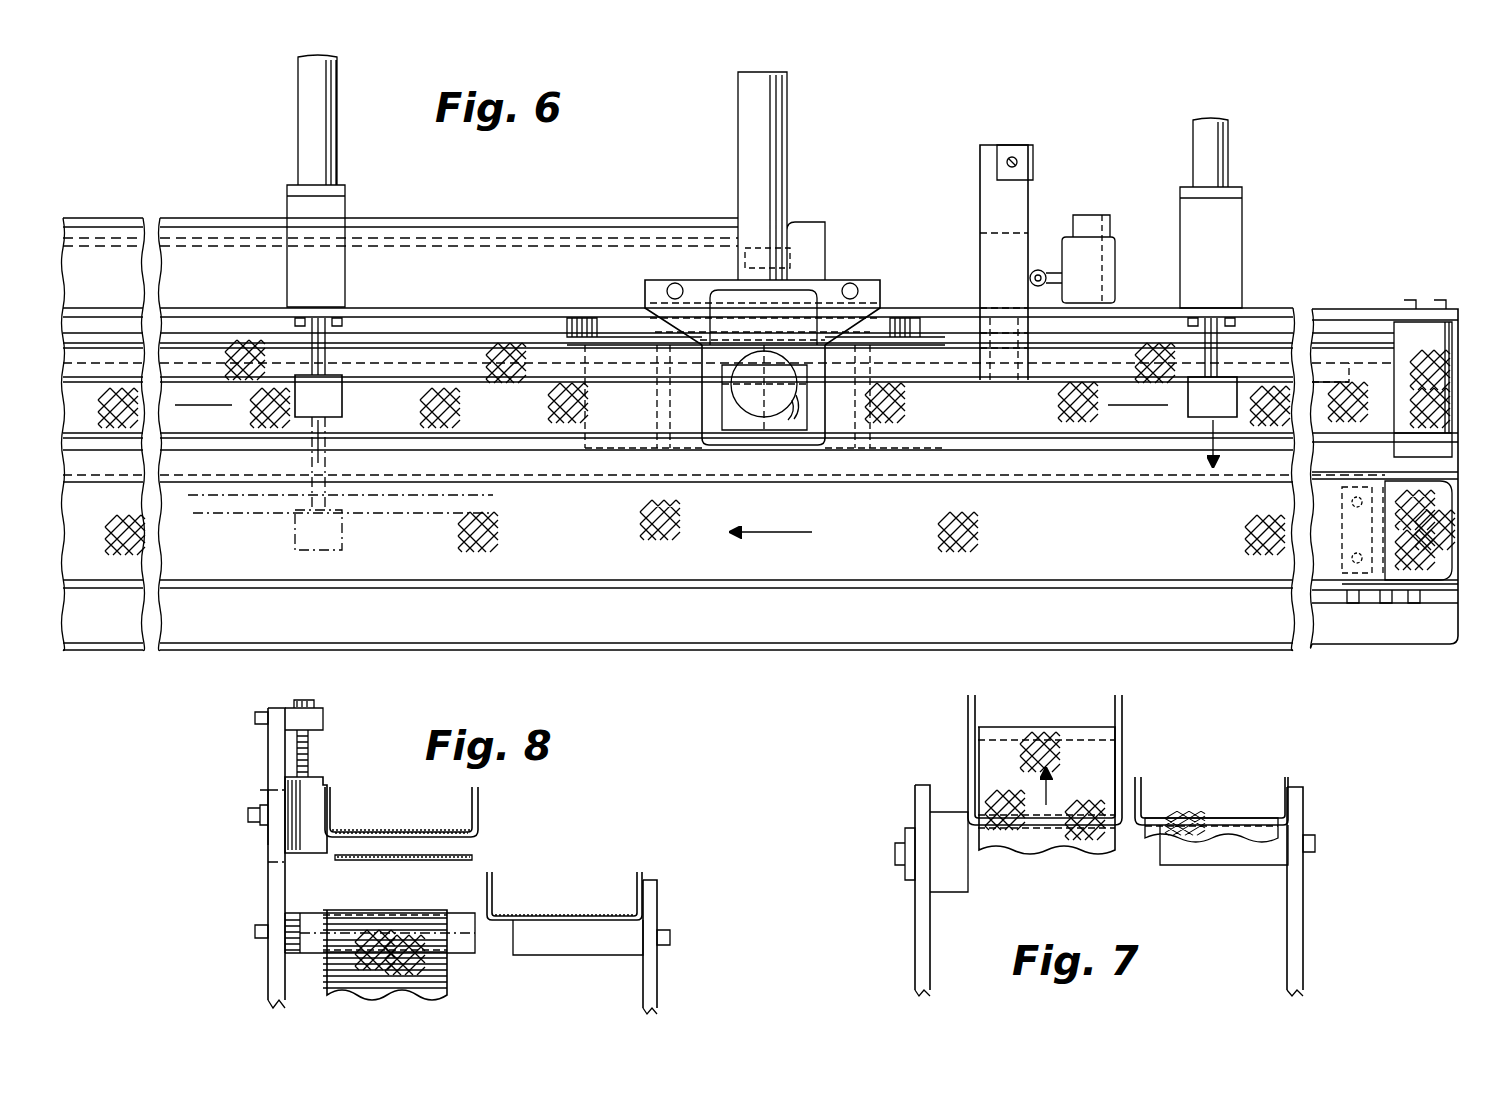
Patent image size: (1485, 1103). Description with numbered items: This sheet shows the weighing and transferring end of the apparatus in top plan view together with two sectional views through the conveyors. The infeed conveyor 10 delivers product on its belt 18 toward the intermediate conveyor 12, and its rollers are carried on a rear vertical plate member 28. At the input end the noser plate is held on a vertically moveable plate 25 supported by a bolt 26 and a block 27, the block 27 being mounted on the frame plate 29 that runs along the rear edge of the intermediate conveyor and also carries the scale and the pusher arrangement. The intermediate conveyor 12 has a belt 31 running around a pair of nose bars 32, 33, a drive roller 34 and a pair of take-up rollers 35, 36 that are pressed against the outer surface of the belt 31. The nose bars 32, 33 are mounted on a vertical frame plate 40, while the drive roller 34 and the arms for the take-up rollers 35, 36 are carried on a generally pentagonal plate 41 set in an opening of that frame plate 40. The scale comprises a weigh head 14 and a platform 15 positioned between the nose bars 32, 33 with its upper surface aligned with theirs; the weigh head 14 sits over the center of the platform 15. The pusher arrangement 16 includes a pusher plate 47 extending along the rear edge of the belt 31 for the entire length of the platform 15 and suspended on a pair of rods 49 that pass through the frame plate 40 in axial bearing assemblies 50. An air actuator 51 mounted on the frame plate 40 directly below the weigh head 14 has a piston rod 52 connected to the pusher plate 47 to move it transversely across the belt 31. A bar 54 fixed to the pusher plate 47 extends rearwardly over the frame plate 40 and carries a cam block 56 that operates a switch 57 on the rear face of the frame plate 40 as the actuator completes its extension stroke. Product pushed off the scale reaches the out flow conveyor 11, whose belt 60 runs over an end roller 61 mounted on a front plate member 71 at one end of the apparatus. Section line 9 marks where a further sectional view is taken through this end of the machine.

In FIG. 6, the section line 9- 9 is at (1212, 704).
In FIG. 6, the infeed conveyor 10 is at (88, 418).
In FIG. 8, the infeed conveyor 10 is at (397, 826).
In FIG. 7, the infeed conveyor 10 is at (1015, 740).
In FIG. 6, the out flow conveyor 11 is at (763, 563).
In FIG. 8, the out flow conveyor 11 is at (564, 900).
In FIG. 7, the out flow conveyor 11 is at (1202, 812).
In FIG. 6, the intermediate conveyor 12 is at (1160, 428).
In FIG. 8, the intermediate conveyor 12 is at (372, 915).
In FIG. 6, the weigh head 14 is at (830, 276).
In FIG. 6, the platform 15 is at (1095, 445).
In FIG. 6, the pusher arrangement 16 is at (348, 382).
In FIG. 8, the belt 18 is at (455, 850).
In FIG. 7, the belt 18 is at (985, 763).
In FIG. 8, the vertically moveable plate 25 is at (292, 814).
In FIG. 8, the bolt 26 is at (310, 754).
In FIG. 8, the block 27 is at (320, 712).
In FIG. 7, the rear vertical plate member 28 is at (917, 808).
In FIG. 6, the frame plate 29 is at (166, 310).
In FIG. 8, the frame plate 29 is at (275, 902).
In FIG. 6, the belt 31 is at (1102, 393).
In FIG. 8, the belt 31 is at (405, 918).
In FIG. 8, the nose bar 32 is at (305, 933).
In FIG. 6, the nose bar 33 is at (1433, 450).
In FIG. 6, the drive roller 34 is at (668, 450).
In FIG. 6, the take-up roller 35 is at (585, 412).
In FIG. 6, the take-up roller 36 is at (877, 450).
In FIG. 6, the vertical frame plate 40 is at (1370, 309).
In FIG. 6, the pentagonal plate 41 is at (625, 340).
In FIG. 6, the pusher plate 47 is at (405, 518).
In FIG. 6, the rods 49 is at (325, 337).
In FIG. 6, the axial bearing assembly 50 is at (290, 200).
In FIG. 6, the air actuator 51 is at (778, 138).
In FIG. 6, the piston rod 52 is at (838, 297).
In FIG. 6, the bar 54 is at (980, 160).
In FIG. 6, the cam block 56 is at (1015, 158).
In FIG. 6, the switch 57 is at (1108, 262).
In FIG. 6, the belt 60 is at (490, 570).
In FIG. 8, the belt 60 is at (615, 906).
In FIG. 7, the belt 60 is at (1272, 820).
In FIG. 6, the end roller 61 is at (1441, 606).
In FIG. 6, the front plate member 71 is at (1372, 594).